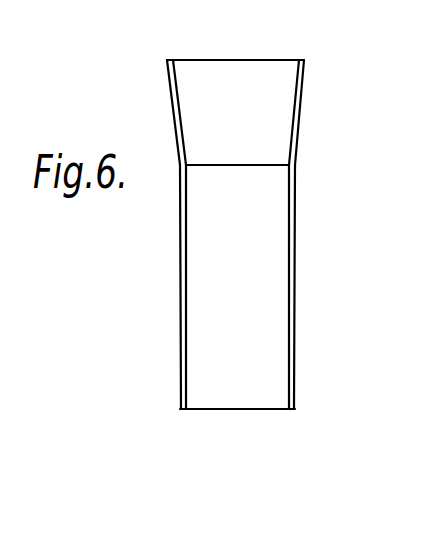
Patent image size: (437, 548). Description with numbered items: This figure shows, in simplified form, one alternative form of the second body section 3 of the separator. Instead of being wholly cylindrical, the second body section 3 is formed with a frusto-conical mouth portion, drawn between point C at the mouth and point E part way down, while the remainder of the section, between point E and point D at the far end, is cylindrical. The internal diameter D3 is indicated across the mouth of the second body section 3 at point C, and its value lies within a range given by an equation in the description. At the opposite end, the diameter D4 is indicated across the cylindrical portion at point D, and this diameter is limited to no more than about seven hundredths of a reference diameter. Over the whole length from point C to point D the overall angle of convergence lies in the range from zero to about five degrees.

The second body section 3 is at (179, 256).
The point C is at (302, 63).
The point E is at (290, 166).
The point D is at (289, 408).
The internal diameter D3 is at (298, 58).
The diameter D4 is at (289, 409).